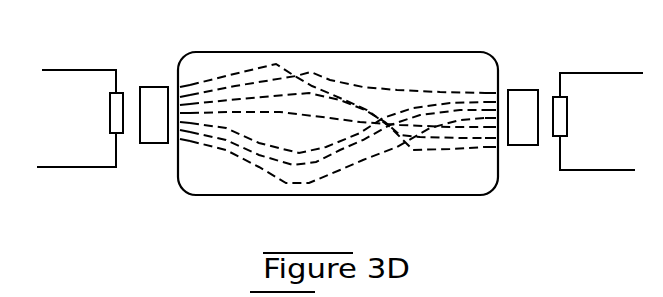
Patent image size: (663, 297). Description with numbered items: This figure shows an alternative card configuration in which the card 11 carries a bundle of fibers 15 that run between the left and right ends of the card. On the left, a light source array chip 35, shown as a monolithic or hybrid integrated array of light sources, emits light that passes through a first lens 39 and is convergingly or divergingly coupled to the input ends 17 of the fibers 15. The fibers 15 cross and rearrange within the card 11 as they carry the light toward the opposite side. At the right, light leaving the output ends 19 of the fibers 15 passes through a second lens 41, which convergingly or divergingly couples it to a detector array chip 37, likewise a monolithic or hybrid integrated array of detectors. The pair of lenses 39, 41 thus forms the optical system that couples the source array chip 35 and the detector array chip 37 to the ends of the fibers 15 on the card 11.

The card 11 is at (392, 52).
The fibers 15 is at (357, 153).
The input ends of the fibers 17 is at (195, 133).
The output ends of the fibers 19 is at (485, 138).
The light source array chip 35 is at (109, 118).
The detector array chip 37 is at (567, 121).
The lens 39 is at (140, 87).
The lens 41 is at (532, 90).